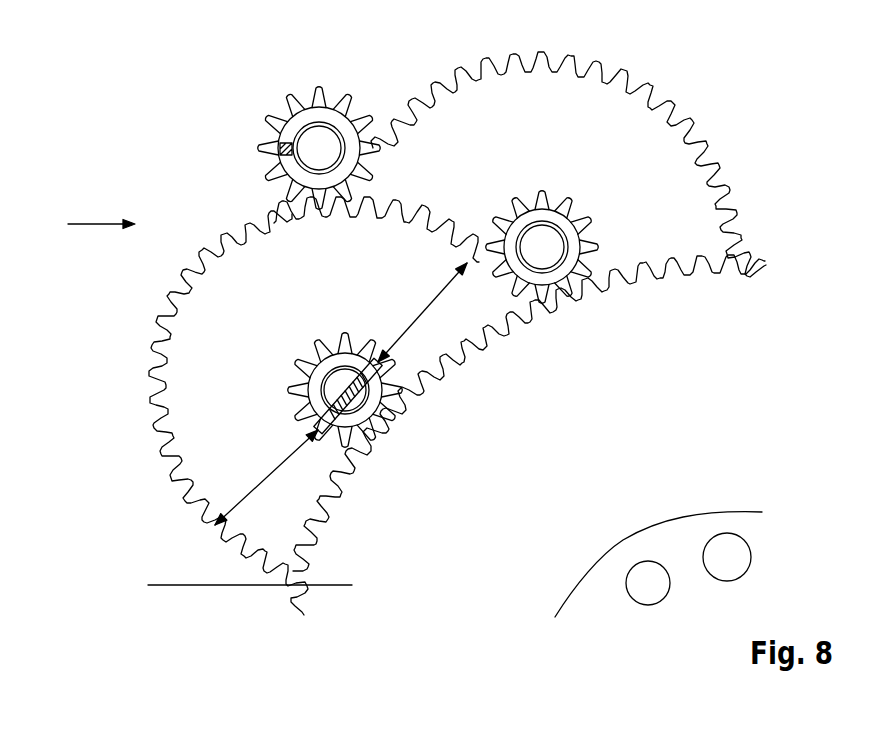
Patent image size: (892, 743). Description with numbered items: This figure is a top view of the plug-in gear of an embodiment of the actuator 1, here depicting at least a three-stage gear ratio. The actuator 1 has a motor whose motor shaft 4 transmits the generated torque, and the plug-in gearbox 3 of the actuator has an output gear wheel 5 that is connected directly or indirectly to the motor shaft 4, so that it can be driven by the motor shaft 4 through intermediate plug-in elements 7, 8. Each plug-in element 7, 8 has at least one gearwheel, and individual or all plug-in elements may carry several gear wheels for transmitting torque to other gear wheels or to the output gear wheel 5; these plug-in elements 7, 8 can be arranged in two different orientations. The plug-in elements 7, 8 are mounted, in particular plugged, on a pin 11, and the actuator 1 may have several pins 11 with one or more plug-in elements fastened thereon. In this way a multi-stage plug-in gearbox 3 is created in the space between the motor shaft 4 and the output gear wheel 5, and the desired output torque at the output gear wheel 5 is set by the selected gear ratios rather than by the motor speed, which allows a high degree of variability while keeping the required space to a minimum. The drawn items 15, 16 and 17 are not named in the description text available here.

The actuator 1 is at (790, 153).
The plug-in gearbox 3 is at (86, 227).
The motor shaft 4 is at (316, 148).
The output gear wheel 5 is at (236, 588).
The plug-in element 7 is at (462, 132).
The plug-in element 8 is at (190, 395).
The pin 11 is at (542, 247).
The first distance 15 is at (409, 312).
The second distance 16 is at (293, 473).
The outer toothing of rack segment 17 is at (686, 123).